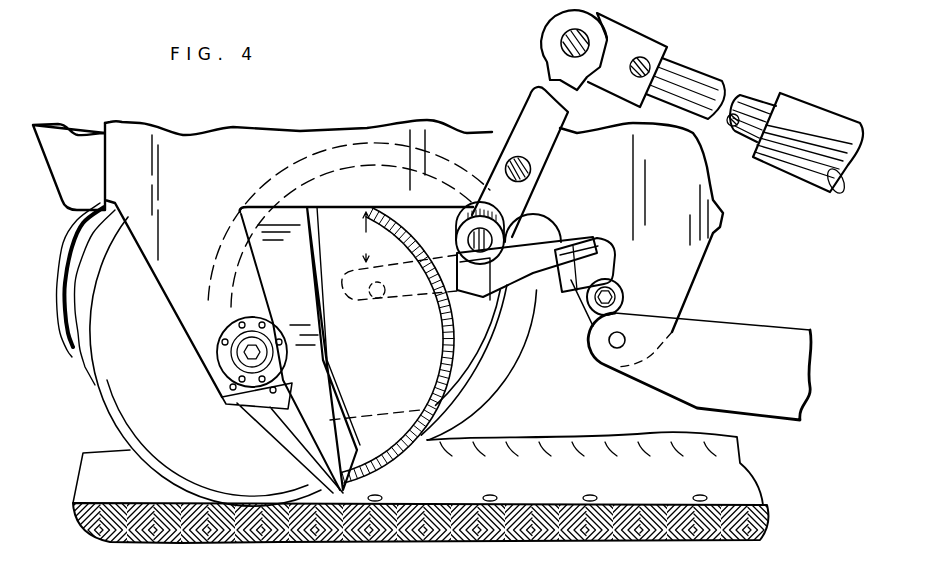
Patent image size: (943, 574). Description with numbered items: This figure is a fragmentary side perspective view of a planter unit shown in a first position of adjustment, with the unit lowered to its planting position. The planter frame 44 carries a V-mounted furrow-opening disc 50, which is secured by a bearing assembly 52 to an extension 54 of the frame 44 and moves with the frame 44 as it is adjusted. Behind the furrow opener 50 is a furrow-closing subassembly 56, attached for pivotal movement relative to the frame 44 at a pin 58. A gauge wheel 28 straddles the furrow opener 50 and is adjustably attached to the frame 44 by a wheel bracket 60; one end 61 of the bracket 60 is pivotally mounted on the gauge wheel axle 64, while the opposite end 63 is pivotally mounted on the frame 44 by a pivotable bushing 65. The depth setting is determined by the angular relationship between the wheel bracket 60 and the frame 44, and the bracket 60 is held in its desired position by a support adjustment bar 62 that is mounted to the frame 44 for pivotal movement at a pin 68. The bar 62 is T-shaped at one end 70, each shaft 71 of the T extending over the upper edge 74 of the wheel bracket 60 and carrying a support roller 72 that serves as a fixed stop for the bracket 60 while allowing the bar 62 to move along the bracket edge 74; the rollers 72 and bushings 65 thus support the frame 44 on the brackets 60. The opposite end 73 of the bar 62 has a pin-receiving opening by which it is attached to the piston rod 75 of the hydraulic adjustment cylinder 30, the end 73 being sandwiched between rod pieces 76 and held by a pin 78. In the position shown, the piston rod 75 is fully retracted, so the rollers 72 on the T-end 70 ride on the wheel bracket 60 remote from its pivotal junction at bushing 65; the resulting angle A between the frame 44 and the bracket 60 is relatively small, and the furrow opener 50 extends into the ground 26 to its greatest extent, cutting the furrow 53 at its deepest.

The ground 26 is at (663, 503).
The gauge wheels 28 is at (512, 362).
The hydraulic adjustment cylinder 30 is at (802, 136).
The frame 44 is at (231, 168).
The furrow-opening discs 50 is at (103, 363).
The bearing assemblies 52 is at (246, 350).
The furrow 53 is at (537, 487).
The extensions 54 is at (195, 248).
The furrow-closing subassembly 56 is at (799, 334).
The pin 58 is at (625, 343).
The wheel brackets 60 is at (497, 300).
The one end of the bracket 61 is at (364, 312).
The support adjustment bar 62 is at (526, 128).
The opposite end of the bracket 63 is at (578, 298).
The gauge wheel axle 64 is at (383, 293).
The pivotable bushing 65 is at (620, 278).
The pin 68 is at (531, 180).
The T-shaped end 70 is at (508, 216).
The shaft 71 is at (486, 246).
The support roller 72 is at (462, 228).
The opposite end of the bar 73 is at (543, 63).
The upper edge 74 is at (557, 240).
The piston rod 75 is at (688, 77).
The rod pieces 76 is at (633, 40).
The pin 78 is at (560, 37).
The angle A is at (366, 237).